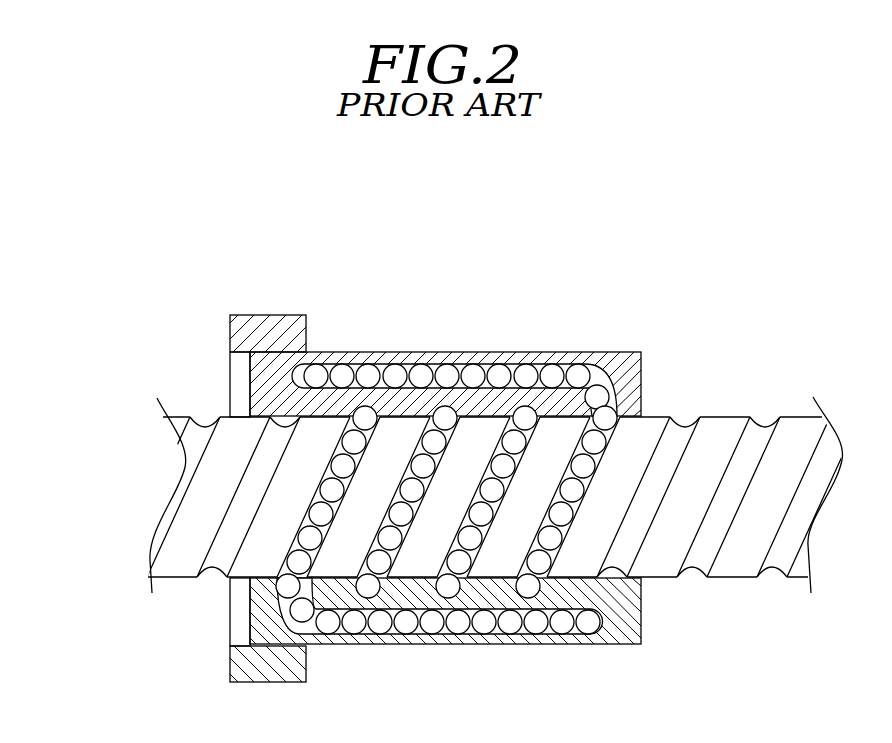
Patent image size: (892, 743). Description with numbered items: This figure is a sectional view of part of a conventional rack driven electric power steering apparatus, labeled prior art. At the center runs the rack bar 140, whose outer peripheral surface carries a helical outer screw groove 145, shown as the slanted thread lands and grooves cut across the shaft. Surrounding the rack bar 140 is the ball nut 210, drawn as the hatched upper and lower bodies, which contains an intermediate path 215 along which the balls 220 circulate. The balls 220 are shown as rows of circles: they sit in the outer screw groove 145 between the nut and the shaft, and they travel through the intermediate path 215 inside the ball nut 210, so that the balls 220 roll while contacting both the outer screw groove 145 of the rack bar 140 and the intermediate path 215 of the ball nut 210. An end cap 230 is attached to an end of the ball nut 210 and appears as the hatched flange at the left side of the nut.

The rack bar 140 is at (172, 542).
The outer screw groove 145 is at (212, 565).
The ball nut 210 is at (625, 632).
The intermediate path 215 is at (295, 377).
The balls 220 is at (500, 377).
The end cap 230 is at (270, 323).